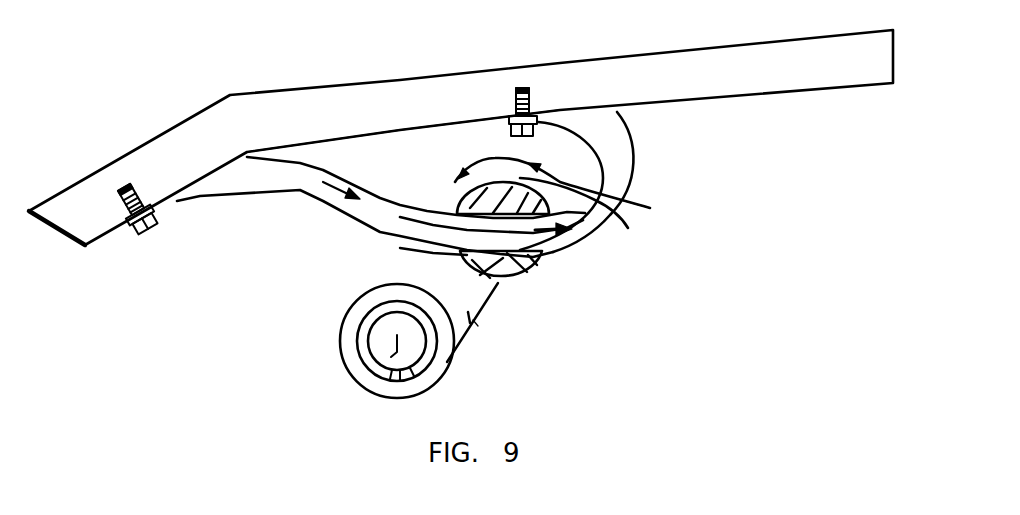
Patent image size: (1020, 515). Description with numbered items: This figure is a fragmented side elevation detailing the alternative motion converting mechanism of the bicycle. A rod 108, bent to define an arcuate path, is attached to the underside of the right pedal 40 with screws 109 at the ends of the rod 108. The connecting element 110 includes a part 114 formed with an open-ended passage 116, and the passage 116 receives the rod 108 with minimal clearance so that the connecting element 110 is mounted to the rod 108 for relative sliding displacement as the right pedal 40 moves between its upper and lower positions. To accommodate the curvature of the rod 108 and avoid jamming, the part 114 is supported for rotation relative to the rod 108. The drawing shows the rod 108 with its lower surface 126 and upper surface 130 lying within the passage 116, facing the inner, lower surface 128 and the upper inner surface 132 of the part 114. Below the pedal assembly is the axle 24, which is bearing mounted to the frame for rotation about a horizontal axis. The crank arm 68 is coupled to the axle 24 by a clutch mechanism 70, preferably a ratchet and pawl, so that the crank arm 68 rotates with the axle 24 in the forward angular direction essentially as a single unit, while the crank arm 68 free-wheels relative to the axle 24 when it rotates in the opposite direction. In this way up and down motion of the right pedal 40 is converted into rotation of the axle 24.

The right pedal 40 is at (293, 88).
The rod 108 is at (356, 233).
The screws 109 is at (535, 134).
The connecting element 110 is at (471, 145).
The part 114 is at (465, 200).
The open-ended passage 116 is at (430, 250).
The lower surface 126 is at (523, 276).
The inner, lower surface 128 is at (498, 283).
The upper surface 130 is at (636, 226).
The upper inner surface 132 is at (631, 204).
The crank arm 68 is at (473, 320).
The clutch mechanism 70 is at (440, 381).
The axle 24 is at (385, 360).